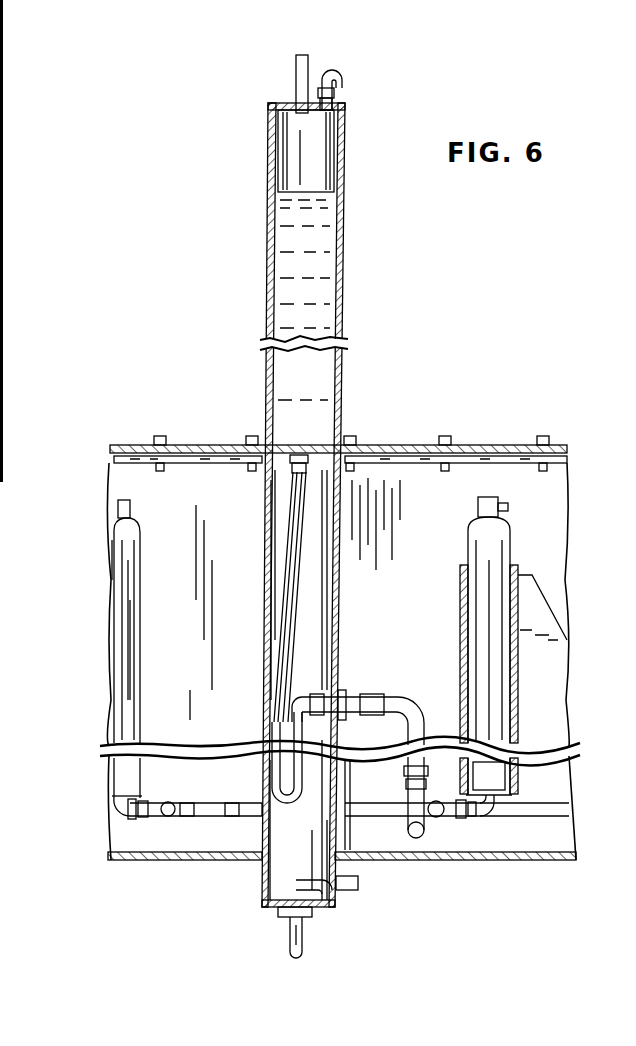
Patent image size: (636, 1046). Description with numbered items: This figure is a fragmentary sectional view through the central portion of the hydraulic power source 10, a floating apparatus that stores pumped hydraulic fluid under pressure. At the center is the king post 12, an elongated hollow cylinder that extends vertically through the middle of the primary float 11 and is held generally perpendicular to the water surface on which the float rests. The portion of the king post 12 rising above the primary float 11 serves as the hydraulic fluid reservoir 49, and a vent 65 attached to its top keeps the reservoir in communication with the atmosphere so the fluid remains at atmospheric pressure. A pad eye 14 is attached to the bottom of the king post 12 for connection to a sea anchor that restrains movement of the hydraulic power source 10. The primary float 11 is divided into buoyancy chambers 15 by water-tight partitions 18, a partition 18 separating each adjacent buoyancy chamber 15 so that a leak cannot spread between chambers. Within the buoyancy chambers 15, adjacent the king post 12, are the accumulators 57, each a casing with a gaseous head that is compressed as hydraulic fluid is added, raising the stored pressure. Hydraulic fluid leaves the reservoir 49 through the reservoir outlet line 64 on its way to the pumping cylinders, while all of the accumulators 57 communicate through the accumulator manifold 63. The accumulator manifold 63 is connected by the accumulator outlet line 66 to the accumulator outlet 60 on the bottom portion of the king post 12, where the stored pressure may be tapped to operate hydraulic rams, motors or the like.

The hydraulic power source 10 is at (474, 296).
The primary float 11 is at (574, 456).
The king post 12 is at (262, 337).
The pad eye 14 is at (290, 944).
The buoyancy chamber 15 is at (194, 482).
The partition 18 is at (172, 480).
The hydraulic fluid reservoir 49 is at (312, 178).
The accumulator 57 is at (150, 546).
The accumulator outlet 60 is at (358, 892).
The accumulator manifold 63 is at (440, 820).
The reservoir outlet line 64 is at (404, 700).
The vent 65 is at (348, 74).
The accumulator outlet line 66 is at (216, 818).